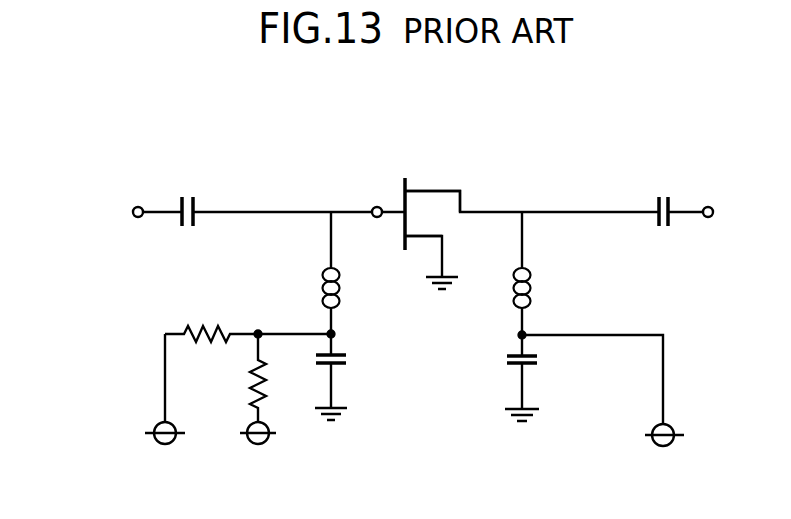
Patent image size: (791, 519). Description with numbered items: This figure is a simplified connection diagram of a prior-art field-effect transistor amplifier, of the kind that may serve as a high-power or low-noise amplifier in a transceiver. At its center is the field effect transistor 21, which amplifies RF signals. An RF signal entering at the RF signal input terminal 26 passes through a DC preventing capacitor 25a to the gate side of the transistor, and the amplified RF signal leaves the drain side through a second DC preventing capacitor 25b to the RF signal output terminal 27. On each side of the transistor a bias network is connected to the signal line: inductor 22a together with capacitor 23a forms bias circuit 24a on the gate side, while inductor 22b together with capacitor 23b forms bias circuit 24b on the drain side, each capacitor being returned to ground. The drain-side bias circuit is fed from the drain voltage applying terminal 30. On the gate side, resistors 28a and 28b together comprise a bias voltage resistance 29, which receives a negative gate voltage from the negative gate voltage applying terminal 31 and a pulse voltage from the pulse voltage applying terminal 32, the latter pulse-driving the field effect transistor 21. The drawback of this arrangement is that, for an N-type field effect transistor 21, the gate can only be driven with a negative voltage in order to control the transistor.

The field effect transistor 21 is at (432, 190).
The inductor 22a is at (342, 292).
The inductor 22b is at (538, 284).
The capacitor 23a is at (353, 363).
The capacitor 23b is at (543, 357).
The bias circuit 24a is at (399, 316).
The bias circuit 24b is at (609, 316).
The DC preventing capacitor 25a is at (192, 192).
The DC preventing capacitor 25b is at (663, 192).
The RF signal input terminal 26 is at (122, 208).
The RF signal output terminal 27 is at (713, 200).
The resistor 28a is at (190, 313).
The resistor 28b is at (240, 385).
The bias voltage resistance 29 is at (172, 361).
The drain voltage applying terminal 30 is at (668, 447).
The negative gate voltage applying terminal 31 is at (157, 447).
The pulse voltage applying terminal 32 is at (253, 447).